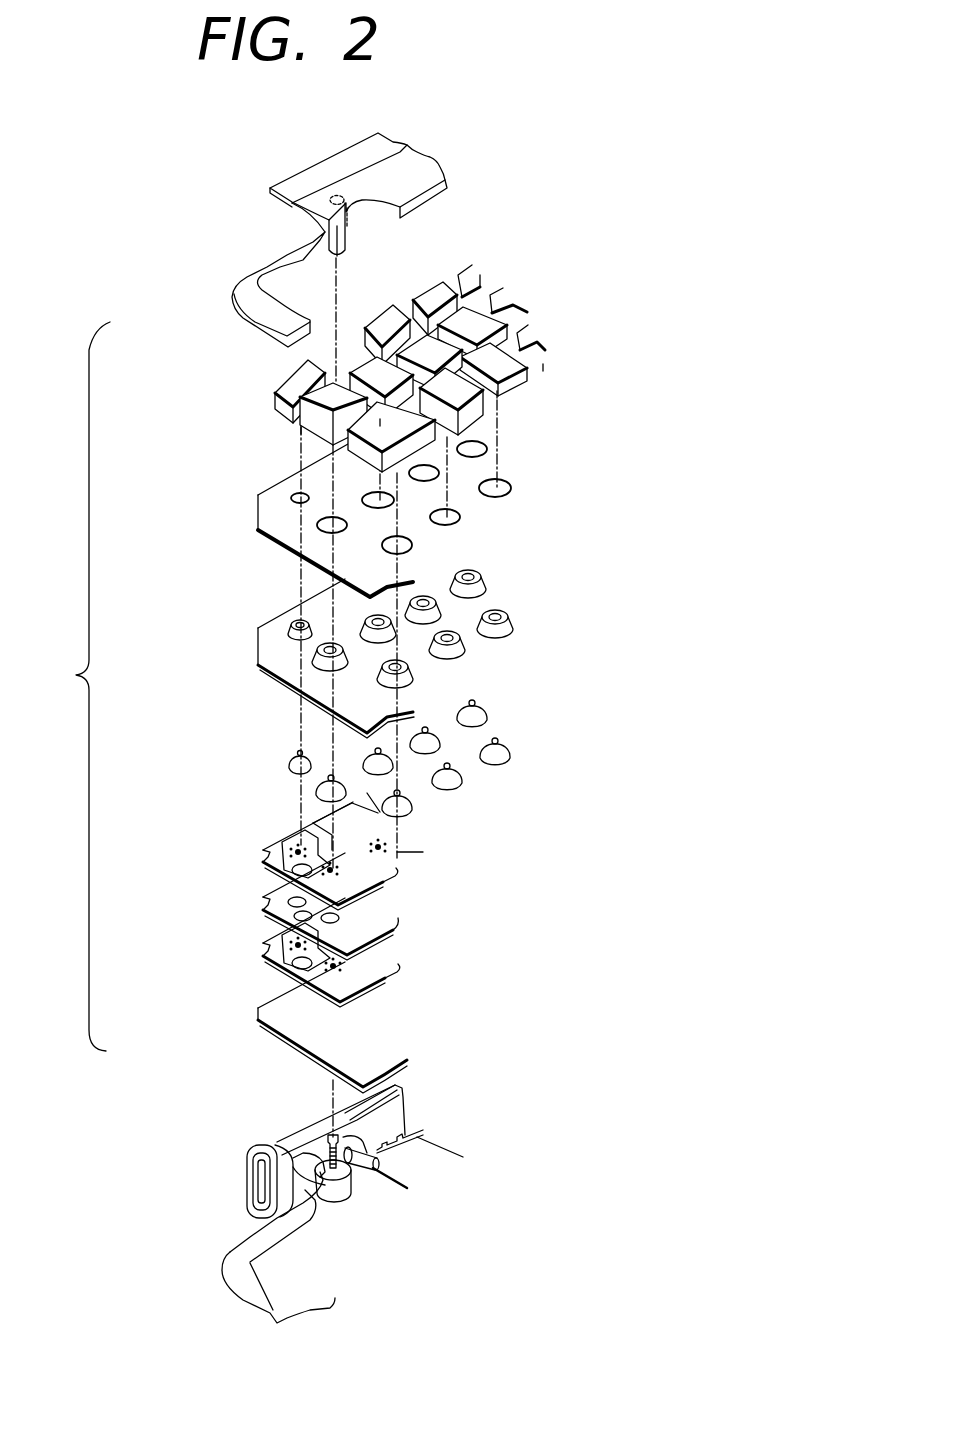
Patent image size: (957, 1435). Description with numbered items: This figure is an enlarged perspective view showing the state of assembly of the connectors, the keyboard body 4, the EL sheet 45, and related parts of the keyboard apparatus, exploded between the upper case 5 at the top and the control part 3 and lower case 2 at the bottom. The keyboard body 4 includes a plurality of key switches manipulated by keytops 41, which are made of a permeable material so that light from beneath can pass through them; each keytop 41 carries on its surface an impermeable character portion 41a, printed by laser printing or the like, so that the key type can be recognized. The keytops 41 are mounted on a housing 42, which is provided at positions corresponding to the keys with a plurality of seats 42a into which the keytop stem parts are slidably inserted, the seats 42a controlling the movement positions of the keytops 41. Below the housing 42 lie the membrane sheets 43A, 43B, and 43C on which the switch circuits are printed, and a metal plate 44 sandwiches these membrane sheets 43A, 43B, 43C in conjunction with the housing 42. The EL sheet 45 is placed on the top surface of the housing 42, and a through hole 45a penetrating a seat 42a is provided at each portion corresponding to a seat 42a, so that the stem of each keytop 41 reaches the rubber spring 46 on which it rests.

The lower case 2 is at (195, 1285).
The control part 3 is at (210, 1158).
The keyboard body 4 is at (79, 686).
The upper case 5 is at (195, 274).
The keytop 41 is at (295, 422).
The character portion 41a is at (287, 388).
The housing 42 is at (277, 655).
The seat 42a is at (293, 627).
The membrane sheet 43A is at (267, 960).
The membrane sheet 43B is at (260, 910).
The membrane sheet 43C is at (263, 863).
The metal plate 44 is at (270, 995).
The EL sheet 45 is at (275, 525).
The through hole 45a is at (297, 498).
The rubber spring 46 is at (293, 765).